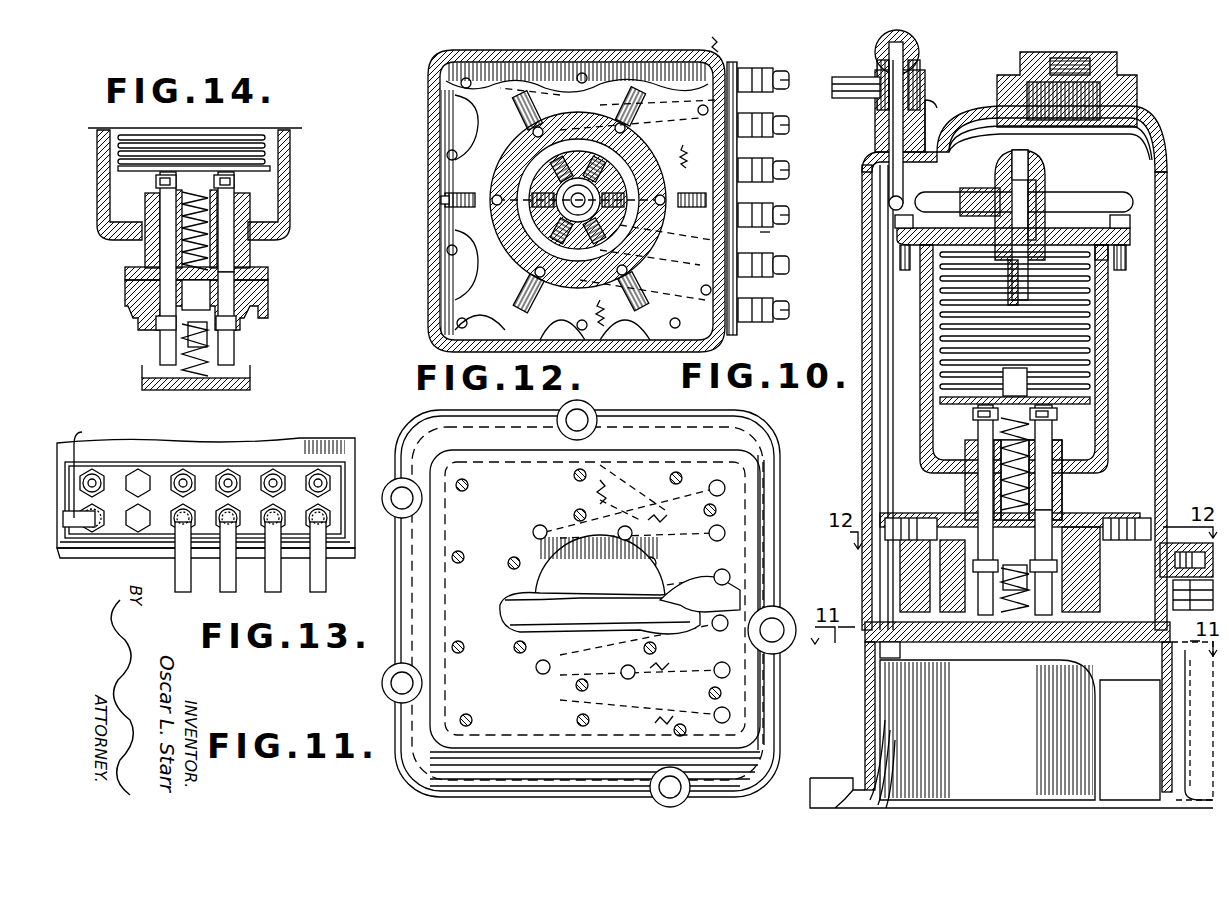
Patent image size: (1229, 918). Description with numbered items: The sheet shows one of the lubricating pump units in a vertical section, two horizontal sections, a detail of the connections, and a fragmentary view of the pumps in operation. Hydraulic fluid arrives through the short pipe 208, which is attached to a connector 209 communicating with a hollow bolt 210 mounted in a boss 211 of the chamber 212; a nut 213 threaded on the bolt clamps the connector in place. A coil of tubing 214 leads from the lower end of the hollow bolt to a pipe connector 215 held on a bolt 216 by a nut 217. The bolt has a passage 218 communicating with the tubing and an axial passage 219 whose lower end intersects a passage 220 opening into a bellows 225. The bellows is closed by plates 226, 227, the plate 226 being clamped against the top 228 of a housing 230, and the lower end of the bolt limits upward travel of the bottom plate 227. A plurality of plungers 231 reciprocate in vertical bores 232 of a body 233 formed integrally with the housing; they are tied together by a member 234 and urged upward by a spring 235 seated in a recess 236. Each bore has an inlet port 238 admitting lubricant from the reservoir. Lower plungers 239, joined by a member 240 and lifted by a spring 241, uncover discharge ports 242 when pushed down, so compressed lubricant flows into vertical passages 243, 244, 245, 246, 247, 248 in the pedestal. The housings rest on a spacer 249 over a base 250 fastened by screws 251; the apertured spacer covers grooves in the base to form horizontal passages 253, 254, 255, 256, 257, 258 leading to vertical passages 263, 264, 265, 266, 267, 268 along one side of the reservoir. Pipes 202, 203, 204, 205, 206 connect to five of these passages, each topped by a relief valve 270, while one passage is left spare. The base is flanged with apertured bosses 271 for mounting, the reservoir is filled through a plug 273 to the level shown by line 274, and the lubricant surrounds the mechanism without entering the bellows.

In FIG. 13, the pipe 202 is at (91, 474).
In FIG. 12, the pipe 202 is at (789, 310).
In FIG. 13, the pipe 203 is at (188, 592).
In FIG. 12, the pipe 203 is at (789, 215).
In FIG. 13, the pipe 204 is at (233, 592).
In FIG. 12, the pipe 204 is at (789, 170).
In FIG. 13, the pipe 205 is at (280, 592).
In FIG. 12, the pipe 205 is at (789, 125).
In FIG. 13, the pipe 206 is at (326, 592).
In FIG. 12, the pipe 206 is at (789, 80).
In FIG. 10, the short pipe 208 is at (842, 78).
In FIG. 10, the connector 209 is at (921, 90).
In FIG. 10, the hollow bolt 210 is at (885, 120).
In FIG. 10, the boss 211 is at (928, 112).
In FIG. 12, the chamber 212 is at (428, 128).
In FIG. 10, the chamber 212 is at (1215, 276).
In FIG. 10, the nut 213 is at (918, 56).
In FIG. 10, the coil of tubing 214 is at (889, 180).
In FIG. 10, the pipe connector 215 is at (1032, 198).
In FIG. 10, the bolt 216 is at (1080, 196).
In FIG. 10, the nut 217 is at (1030, 162).
In FIG. 10, the passage 218 is at (985, 190).
In FIG. 10, the passage 219 is at (1012, 162).
In FIG. 10, the passage 220 is at (1018, 268).
In FIG. 14, the bellows 225 is at (347, 170).
In FIG. 10, the bellows 225 is at (1155, 368).
In FIG. 10, the plate 226 is at (1100, 258).
In FIG. 10, the bottom plate 227 is at (1090, 400).
In FIG. 10, the top 228 is at (1130, 228).
In FIG. 14, the housing 230 is at (347, 207).
In FIG. 10, the housing 230 is at (1155, 343).
In FIG. 14, the plungers 231 is at (226, 200).
In FIG. 10, the plungers 231 is at (1052, 462).
In FIG. 14, the vertical bores 232 is at (252, 268).
In FIG. 10, the vertical bores 232 is at (1060, 512).
In FIG. 14, the body 233 is at (235, 218).
In FIG. 10, the body 233 is at (1065, 465).
In FIG. 14, the member 234 is at (160, 181).
In FIG. 10, the member 234 is at (1057, 418).
In FIG. 14, the spring 235 is at (185, 242).
In FIG. 10, the spring 235 is at (1005, 498).
In FIG. 14, the recess 236 is at (185, 221).
In FIG. 10, the recess 236 is at (1000, 478).
In FIG. 14, the port 238 is at (150, 262).
In FIG. 10, the port 238 is at (1060, 500).
In FIG. 14, the plungers 239 is at (234, 343).
In FIG. 10, the plungers 239 is at (1052, 590).
In FIG. 14, the member 240 is at (160, 323).
In FIG. 10, the member 240 is at (1054, 566).
In FIG. 14, the spring 241 is at (200, 372).
In FIG. 10, the spring 241 is at (1015, 612).
In FIG. 14, the ports 242 is at (262, 288).
In FIG. 10, the ports 242 is at (1115, 520).
In FIG. 12, the vertical passage 243 is at (497, 195).
In FIG. 12, the vertical passage 244 is at (585, 112).
In FIG. 11, the vertical passage 244 is at (540, 525).
In FIG. 12, the vertical passage 245 is at (626, 124).
In FIG. 11, the vertical passage 245 is at (625, 540).
In FIG. 12, the vertical passage 246 is at (660, 205).
In FIG. 12, the vertical passage 247 is at (628, 276).
In FIG. 11, the vertical passage 247 is at (622, 670).
In FIG. 12, the vertical passage 248 is at (541, 278).
In FIG. 11, the vertical passage 248 is at (543, 674).
In FIG. 14, the spacer 249 is at (240, 388).
In FIG. 10, the spacer 249 is at (866, 640).
In FIG. 11, the spacer 249 is at (515, 518).
In FIG. 13, the base 250 is at (346, 558).
In FIG. 10, the base 250 is at (880, 690).
In FIG. 11, the base 250 is at (412, 770).
In FIG. 10, the screws 251 is at (882, 660).
In FIG. 11, the screws 251 is at (462, 653).
In FIG. 12, the horizontal passage 253 is at (530, 250).
In FIG. 11, the horizontal passage 253 is at (520, 615).
In FIG. 12, the horizontal passage 254 is at (720, 50).
In FIG. 11, the horizontal passage 254 is at (621, 487).
In FIG. 12, the horizontal passage 255 is at (689, 155).
In FIG. 11, the horizontal passage 255 is at (678, 518).
In FIG. 12, the horizontal passage 256 is at (730, 160).
In FIG. 11, the horizontal passage 256 is at (678, 592).
In FIG. 12, the horizontal passage 257 is at (730, 248).
In FIG. 11, the horizontal passage 257 is at (680, 658).
In FIG. 12, the horizontal passage 258 is at (600, 318).
In FIG. 11, the horizontal passage 258 is at (658, 730).
In FIG. 12, the vertical passage 263 is at (772, 232).
In FIG. 11, the vertical passage 263 is at (728, 622).
In FIG. 12, the vertical passage 264 is at (730, 75).
In FIG. 11, the vertical passage 264 is at (725, 488).
In FIG. 12, the vertical passage 265 is at (730, 115).
In FIG. 11, the vertical passage 265 is at (725, 533).
In FIG. 12, the vertical passage 266 is at (730, 208).
In FIG. 11, the vertical passage 266 is at (730, 577).
In FIG. 12, the vertical passage 267 is at (730, 293).
In FIG. 11, the vertical passage 267 is at (730, 670).
In FIG. 12, the vertical passage 268 is at (735, 335).
In FIG. 11, the vertical passage 268 is at (730, 715).
In FIG. 10, the relief valve 270 is at (1205, 530).
In FIG. 11, the apertured bosses 271 is at (690, 800).
In FIG. 10, the plug 273 is at (1138, 74).
In FIG. 10, the line 274 is at (1150, 135).